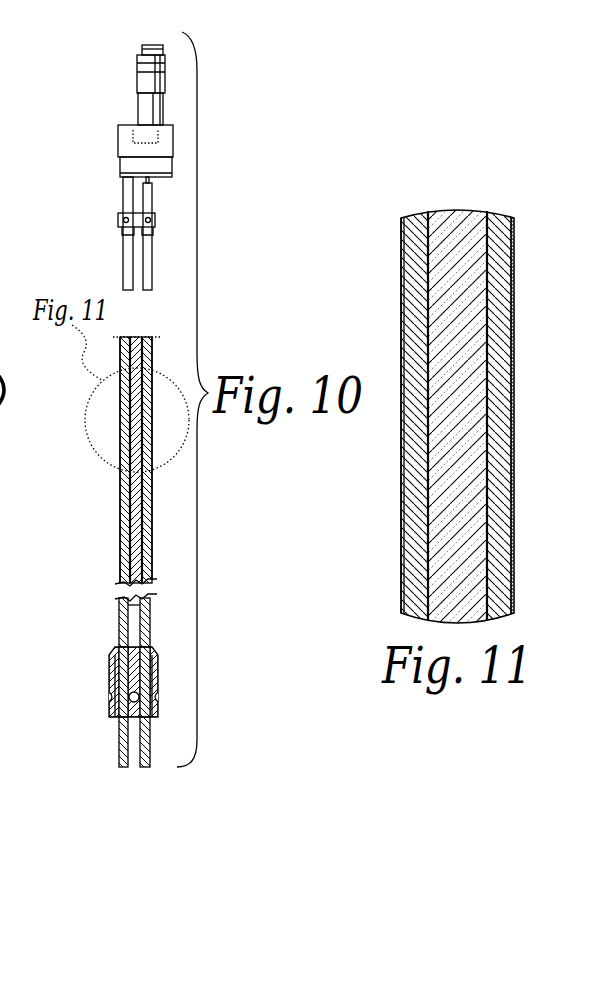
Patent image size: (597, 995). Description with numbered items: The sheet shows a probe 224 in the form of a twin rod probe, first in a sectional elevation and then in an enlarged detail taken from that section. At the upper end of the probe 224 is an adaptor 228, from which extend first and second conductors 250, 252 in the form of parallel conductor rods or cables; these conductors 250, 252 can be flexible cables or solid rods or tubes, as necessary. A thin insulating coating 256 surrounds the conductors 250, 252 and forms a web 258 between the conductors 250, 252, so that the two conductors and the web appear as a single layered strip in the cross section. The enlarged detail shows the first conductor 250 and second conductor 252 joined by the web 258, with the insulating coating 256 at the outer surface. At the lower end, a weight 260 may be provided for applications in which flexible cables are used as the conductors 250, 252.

In FIG. 10, the probe 224 is at (101, 263).
In FIG. 10, the adaptor 228 is at (118, 152).
In FIG. 11, the first conductor 250 is at (412, 217).
In FIG. 11, the second conductor 252 is at (498, 219).
In FIG. 11, the insulating coating 256 is at (516, 298).
In FIG. 10, the web 258 is at (133, 531).
In FIG. 11, the web 258 is at (456, 219).
In FIG. 10, the weight 260 is at (110, 682).